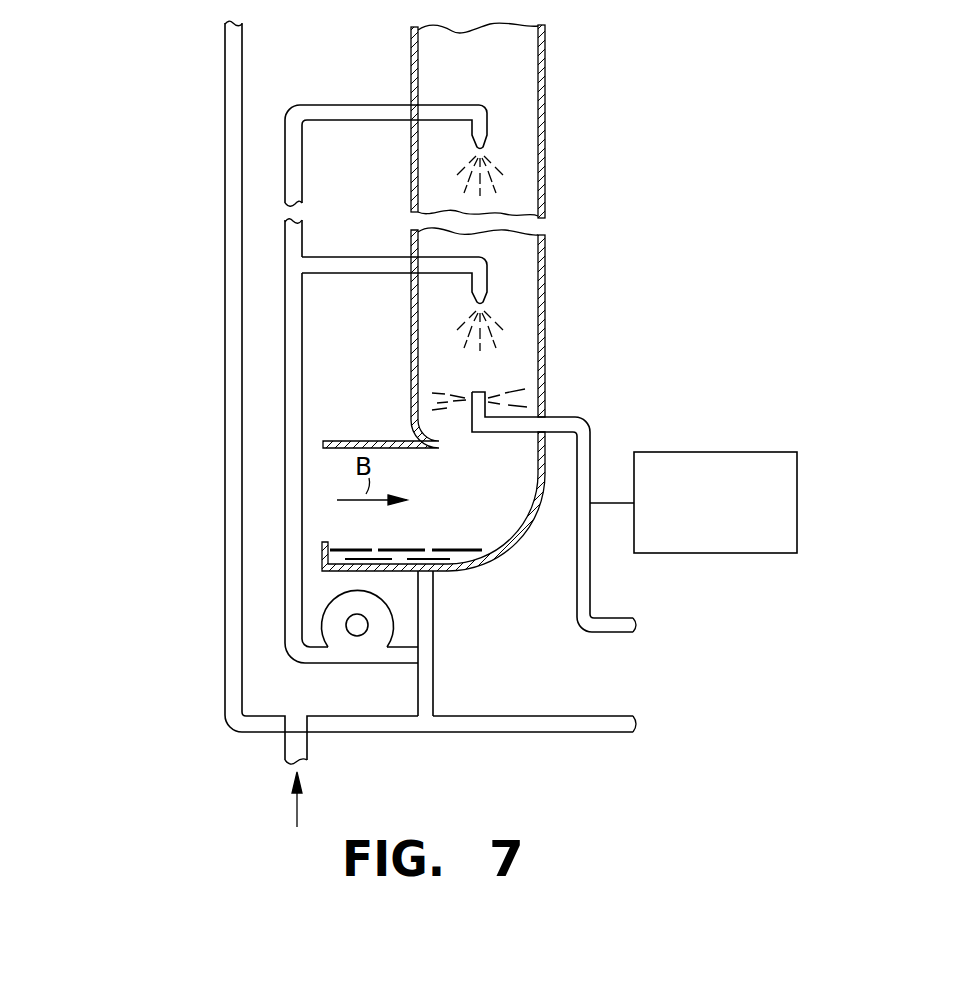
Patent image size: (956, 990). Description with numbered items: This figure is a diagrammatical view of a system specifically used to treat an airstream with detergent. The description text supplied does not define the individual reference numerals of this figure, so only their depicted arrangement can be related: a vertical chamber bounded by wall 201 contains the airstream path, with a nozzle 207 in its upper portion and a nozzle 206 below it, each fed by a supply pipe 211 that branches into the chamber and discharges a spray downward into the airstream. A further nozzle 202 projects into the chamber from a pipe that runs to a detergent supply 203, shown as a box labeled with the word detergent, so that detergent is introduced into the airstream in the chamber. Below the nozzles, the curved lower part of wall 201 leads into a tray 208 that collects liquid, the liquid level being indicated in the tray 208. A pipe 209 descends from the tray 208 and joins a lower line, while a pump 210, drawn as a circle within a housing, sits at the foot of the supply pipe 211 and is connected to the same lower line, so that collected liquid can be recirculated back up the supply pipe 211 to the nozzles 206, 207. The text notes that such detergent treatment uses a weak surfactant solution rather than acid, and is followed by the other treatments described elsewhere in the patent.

The washing chamber wall 201 is at (521, 300).
The detergent nozzle 202 is at (473, 410).
The detergent supply 203 is at (730, 453).
The washing nozzle 206 is at (484, 283).
The rinsing nozzle 207 is at (482, 140).
The liquid reservoir tray 208 is at (413, 548).
The drain pipe 209 is at (425, 614).
The pump 210 is at (337, 628).
The supply pipe 211 is at (294, 374).